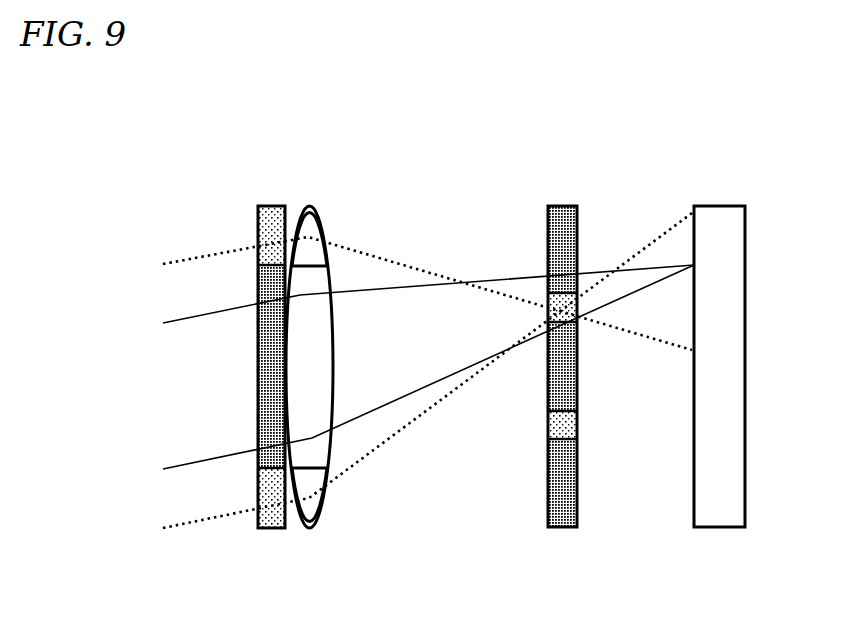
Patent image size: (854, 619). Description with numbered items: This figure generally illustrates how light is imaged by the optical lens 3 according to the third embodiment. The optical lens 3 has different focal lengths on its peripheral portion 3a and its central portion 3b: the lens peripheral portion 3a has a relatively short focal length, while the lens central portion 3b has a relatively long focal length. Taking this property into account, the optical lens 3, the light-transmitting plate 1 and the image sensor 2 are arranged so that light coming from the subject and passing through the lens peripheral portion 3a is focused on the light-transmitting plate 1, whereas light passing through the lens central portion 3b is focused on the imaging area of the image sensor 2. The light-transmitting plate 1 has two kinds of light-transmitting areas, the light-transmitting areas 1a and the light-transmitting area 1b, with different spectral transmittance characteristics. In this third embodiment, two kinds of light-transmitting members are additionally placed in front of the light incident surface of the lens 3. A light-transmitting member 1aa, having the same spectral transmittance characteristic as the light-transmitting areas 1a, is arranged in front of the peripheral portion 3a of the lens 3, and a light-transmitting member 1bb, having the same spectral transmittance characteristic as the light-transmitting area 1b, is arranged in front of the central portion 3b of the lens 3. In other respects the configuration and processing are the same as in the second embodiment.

The light-transmitting plate 1 is at (519, 352).
The light-transmitting areas 1a is at (556, 305).
The light-transmitting area 1b is at (549, 502).
The light-transmitting member 1aa is at (260, 230).
The light-transmitting member 1bb is at (262, 353).
The image sensor 2 is at (721, 497).
The optical lens 3 is at (375, 353).
The peripheral portion 3a is at (307, 235).
The central portion 3b is at (308, 377).